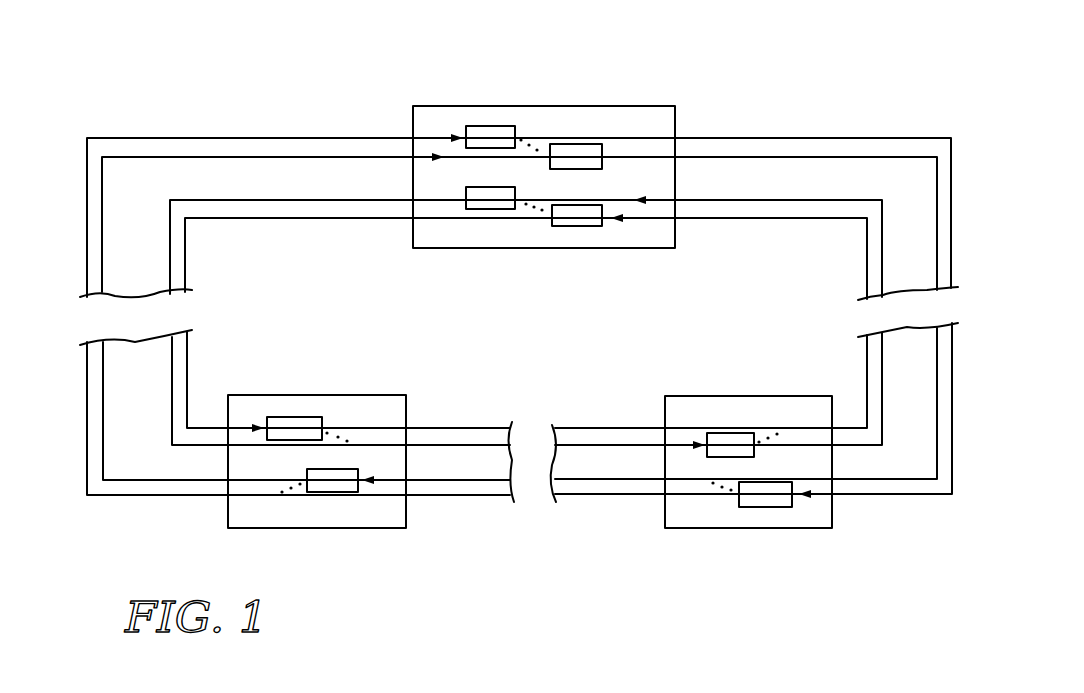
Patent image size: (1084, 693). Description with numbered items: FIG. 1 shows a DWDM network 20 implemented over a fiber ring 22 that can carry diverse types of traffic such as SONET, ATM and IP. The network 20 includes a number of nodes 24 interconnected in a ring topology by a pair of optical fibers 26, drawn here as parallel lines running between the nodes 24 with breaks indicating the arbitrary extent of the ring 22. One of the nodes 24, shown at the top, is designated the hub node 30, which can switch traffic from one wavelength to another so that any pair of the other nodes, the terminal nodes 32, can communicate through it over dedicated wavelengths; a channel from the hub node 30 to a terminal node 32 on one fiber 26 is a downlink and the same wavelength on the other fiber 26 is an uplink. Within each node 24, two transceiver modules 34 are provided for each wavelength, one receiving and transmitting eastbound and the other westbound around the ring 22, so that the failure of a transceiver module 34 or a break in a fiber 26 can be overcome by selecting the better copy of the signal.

The DWDM network 20 is at (500, 350).
The fiber ring 22 is at (251, 347).
The node 24 is at (397, 115).
The optical fiber 26 is at (233, 150).
The hub node 30 is at (589, 254).
The terminal node 32 is at (364, 385).
The transceiver module 34 is at (488, 133).